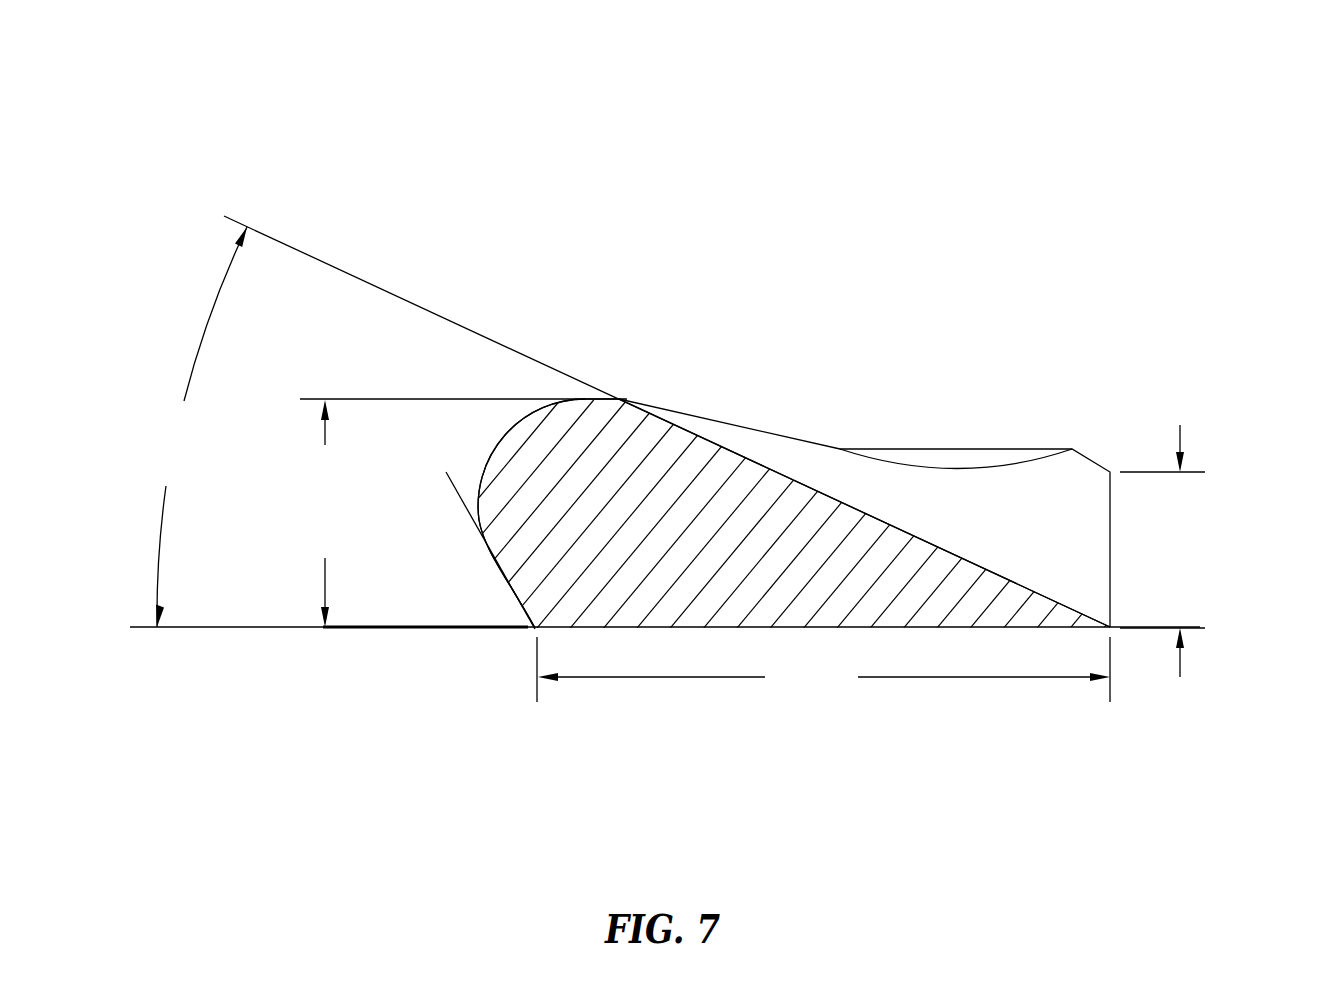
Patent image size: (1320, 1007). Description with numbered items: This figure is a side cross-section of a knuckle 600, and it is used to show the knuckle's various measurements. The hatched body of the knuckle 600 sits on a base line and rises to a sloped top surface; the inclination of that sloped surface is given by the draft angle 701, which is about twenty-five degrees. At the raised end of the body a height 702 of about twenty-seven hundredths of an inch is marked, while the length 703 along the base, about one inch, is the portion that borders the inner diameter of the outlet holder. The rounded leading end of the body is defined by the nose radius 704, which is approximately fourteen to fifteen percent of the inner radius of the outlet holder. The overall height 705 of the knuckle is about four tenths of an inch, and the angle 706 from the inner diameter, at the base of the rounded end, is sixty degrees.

The knuckle 600 is at (734, 335).
The draft angle 701 is at (201, 427).
The height 702 is at (1162, 551).
The length 703 is at (823, 669).
The nose radius 704 is at (447, 483).
The overall height 705 is at (326, 513).
The angle from the inner diameter 706 is at (439, 511).